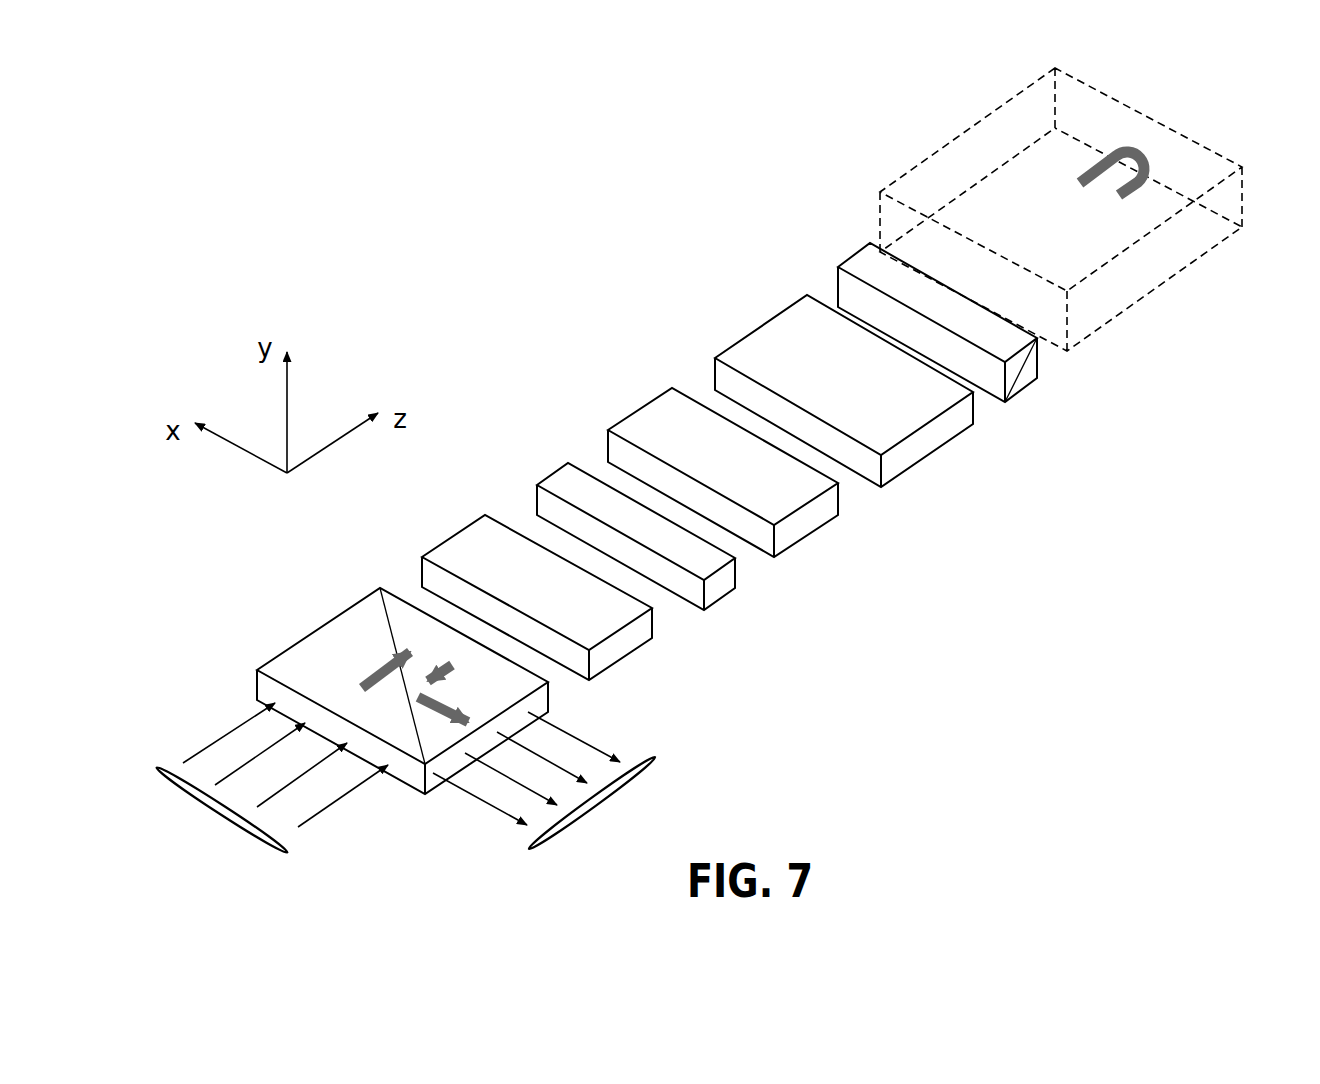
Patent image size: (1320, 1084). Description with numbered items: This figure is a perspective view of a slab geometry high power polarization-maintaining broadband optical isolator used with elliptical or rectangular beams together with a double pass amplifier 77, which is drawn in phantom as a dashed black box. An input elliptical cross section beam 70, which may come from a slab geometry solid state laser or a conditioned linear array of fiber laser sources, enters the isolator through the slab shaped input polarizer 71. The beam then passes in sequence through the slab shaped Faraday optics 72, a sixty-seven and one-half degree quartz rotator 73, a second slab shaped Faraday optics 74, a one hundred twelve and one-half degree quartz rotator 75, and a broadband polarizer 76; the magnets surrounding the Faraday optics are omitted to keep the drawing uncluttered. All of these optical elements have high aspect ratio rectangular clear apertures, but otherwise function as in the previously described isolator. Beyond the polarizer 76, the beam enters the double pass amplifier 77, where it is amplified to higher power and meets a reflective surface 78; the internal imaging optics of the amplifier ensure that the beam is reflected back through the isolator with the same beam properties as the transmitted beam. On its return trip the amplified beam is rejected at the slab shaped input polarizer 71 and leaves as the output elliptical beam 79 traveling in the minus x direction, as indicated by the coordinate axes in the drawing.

The input elliptical cross section beam 70 is at (152, 751).
The slab shaped input polarizer 71 is at (336, 607).
The slab shaped Faraday optics 72 is at (439, 533).
The 67.5° quartz rotator 73 is at (534, 483).
The slab shaped Faraday optics 74 is at (626, 410).
The 112.5° quartz rotator 75 is at (729, 338).
The broadband polarizer 76 is at (834, 277).
The double pass amplifier 77 is at (896, 172).
The reflective surface 78 is at (1153, 140).
The output elliptical beam 79 is at (654, 783).